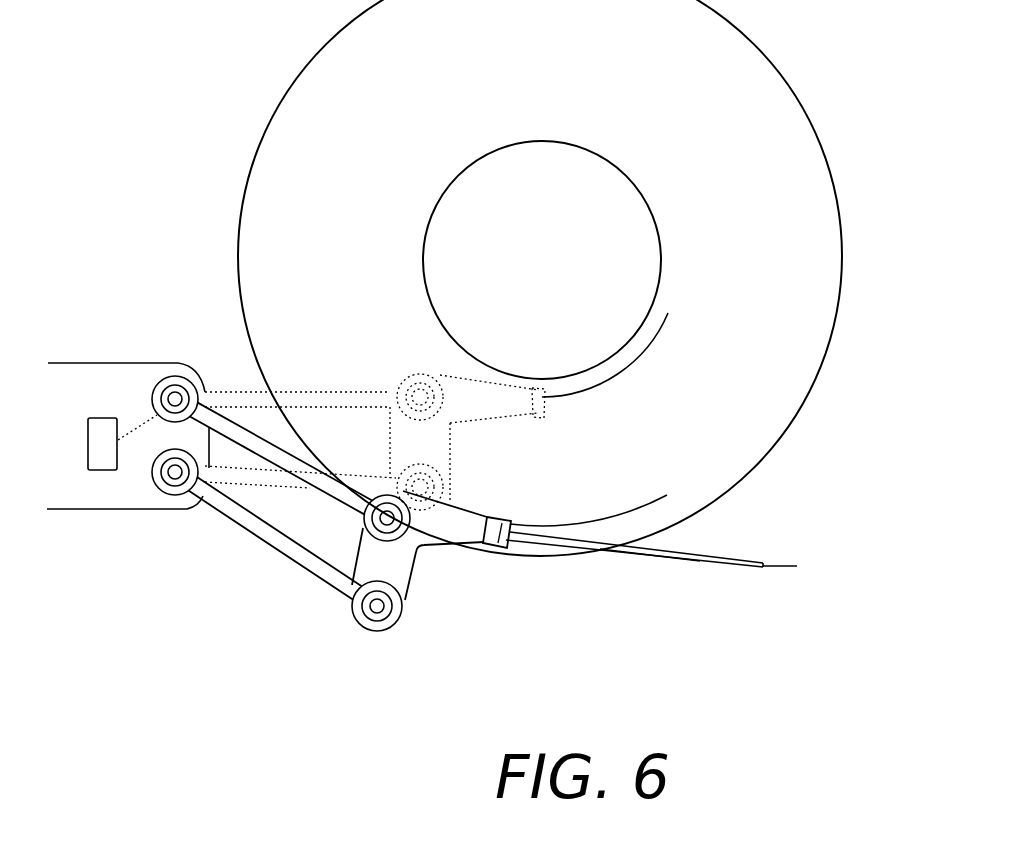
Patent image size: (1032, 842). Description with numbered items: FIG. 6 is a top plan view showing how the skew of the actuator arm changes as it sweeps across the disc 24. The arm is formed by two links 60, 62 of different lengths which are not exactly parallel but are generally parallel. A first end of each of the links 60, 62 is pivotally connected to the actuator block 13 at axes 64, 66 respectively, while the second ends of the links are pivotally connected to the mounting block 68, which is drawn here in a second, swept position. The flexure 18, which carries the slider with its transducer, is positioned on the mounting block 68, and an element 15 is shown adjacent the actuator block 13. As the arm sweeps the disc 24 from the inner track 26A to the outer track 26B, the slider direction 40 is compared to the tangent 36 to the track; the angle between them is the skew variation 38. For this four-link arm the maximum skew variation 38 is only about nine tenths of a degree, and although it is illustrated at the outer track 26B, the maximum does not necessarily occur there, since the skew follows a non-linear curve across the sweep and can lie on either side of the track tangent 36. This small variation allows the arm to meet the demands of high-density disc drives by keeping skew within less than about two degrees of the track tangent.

The disc 24 is at (663, 90).
The inner track 26A is at (633, 367).
The outer track 26B is at (643, 503).
The actuator block 13 is at (88, 390).
The actuator motor 15 is at (88, 443).
The axis 64 is at (176, 398).
The axis 66 is at (175, 474).
The link 60 is at (315, 475).
The link 62 is at (248, 482).
The mounting block 68 is at (467, 528).
The flexure 18 is at (540, 418).
The tangent 36 is at (713, 556).
The skew angle 38 is at (797, 566).
The direction of the slider 40 is at (707, 563).